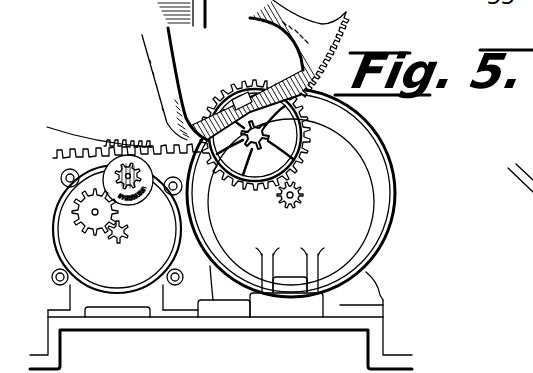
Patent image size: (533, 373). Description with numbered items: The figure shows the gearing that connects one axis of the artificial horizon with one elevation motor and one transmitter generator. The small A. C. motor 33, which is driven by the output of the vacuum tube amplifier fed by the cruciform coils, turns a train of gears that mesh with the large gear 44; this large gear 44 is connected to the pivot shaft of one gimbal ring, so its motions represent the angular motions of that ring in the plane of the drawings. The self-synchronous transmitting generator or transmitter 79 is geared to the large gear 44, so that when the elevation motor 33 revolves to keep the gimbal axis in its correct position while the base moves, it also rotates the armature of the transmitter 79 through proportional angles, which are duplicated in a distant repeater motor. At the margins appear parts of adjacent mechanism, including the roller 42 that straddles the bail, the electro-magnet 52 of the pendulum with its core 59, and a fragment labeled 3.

The A. C. motor 33 is at (117, 224).
The self-synchronous transmitting generator 79 is at (373, 157).
The large gear 44 is at (340, 27).
The electro-magnet 52 is at (134, 71).
The core 59 is at (160, 20).
The roller 42 is at (515, 215).
The frame part 3 is at (526, 312).